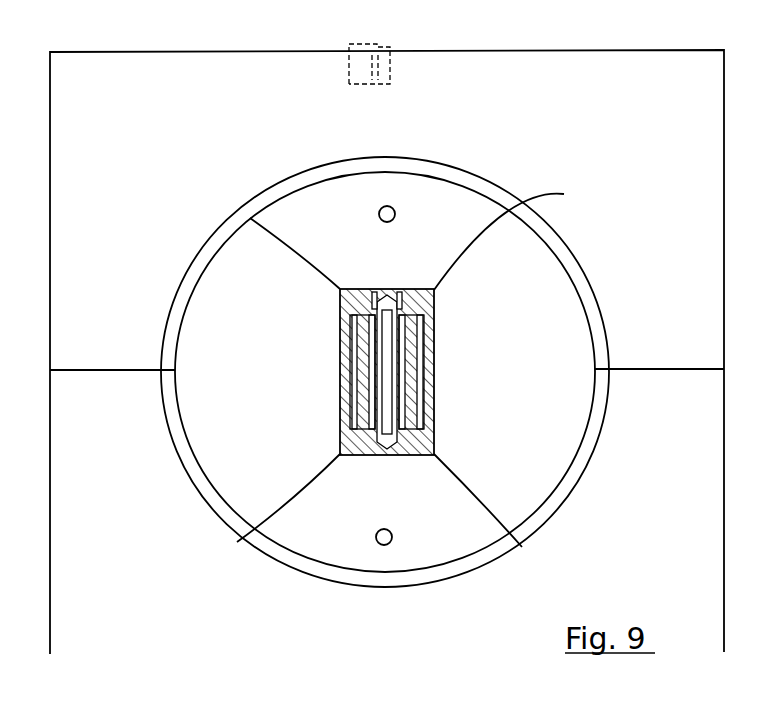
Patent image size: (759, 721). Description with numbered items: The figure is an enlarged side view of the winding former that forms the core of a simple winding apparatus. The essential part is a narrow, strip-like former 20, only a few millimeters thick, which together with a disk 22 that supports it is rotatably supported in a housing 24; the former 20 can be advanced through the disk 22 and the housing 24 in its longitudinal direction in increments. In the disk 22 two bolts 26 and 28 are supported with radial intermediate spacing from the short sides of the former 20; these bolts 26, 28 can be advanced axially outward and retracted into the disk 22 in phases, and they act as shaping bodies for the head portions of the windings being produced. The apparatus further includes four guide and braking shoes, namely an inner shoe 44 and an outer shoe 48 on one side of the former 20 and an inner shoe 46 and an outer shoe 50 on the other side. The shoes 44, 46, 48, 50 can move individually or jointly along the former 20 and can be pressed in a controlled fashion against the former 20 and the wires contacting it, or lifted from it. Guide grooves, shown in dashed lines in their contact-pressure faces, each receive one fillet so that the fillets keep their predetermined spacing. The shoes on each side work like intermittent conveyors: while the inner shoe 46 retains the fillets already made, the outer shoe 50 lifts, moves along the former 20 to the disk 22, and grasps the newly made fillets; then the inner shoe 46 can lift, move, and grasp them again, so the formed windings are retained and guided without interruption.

The former 20 is at (386, 294).
The disk 22 is at (555, 297).
The housing 24 is at (568, 68).
The bolt 26 is at (385, 212).
The bolt 28 is at (382, 535).
The inner shoe 44 is at (273, 516).
The inner shoe 46 is at (494, 516).
The outer shoe 48 is at (248, 216).
The outer shoe 50 is at (517, 234).